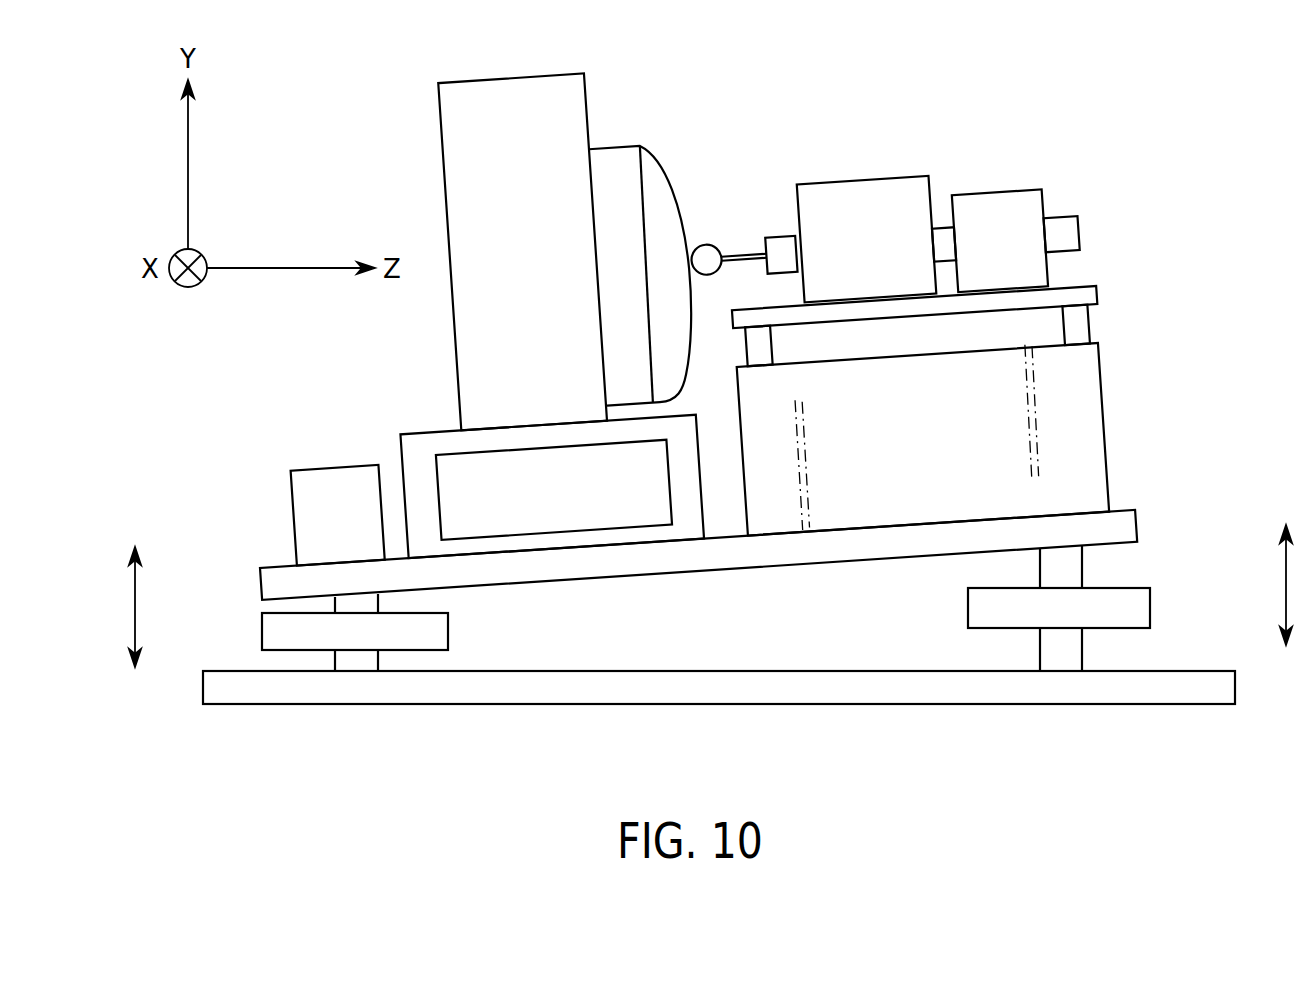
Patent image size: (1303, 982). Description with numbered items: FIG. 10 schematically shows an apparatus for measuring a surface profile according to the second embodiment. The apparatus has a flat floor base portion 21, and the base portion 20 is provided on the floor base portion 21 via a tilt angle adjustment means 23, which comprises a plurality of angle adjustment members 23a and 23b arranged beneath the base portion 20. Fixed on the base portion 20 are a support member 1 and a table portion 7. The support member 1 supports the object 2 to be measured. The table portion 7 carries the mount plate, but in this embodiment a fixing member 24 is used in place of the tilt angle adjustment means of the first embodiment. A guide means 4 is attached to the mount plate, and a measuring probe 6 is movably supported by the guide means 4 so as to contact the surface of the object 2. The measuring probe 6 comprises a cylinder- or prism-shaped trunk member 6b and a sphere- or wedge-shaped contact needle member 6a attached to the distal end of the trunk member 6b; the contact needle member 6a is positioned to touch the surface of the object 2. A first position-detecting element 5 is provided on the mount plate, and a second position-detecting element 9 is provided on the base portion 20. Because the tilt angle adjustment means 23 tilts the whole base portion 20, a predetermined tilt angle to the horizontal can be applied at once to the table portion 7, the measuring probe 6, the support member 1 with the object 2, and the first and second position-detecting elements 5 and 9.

The support member 1 is at (516, 92).
The object to be measured 2 is at (658, 171).
The guide means 4 is at (884, 190).
The first position-detecting element 5 is at (1008, 205).
The measuring probe 6 is at (744, 188).
The contact needle member 6a is at (707, 250).
The trunk member 6b is at (776, 240).
The table portion 7 is at (1097, 455).
The second position-detecting element 9 is at (319, 476).
The base portion 20 is at (1133, 521).
The floor base portion 21 is at (767, 671).
The tilt angle adjustment means 23 is at (706, 608).
The angle adjustment member 23a is at (272, 629).
The angle adjustment member 23b is at (1143, 610).
The fixing member 24 is at (1108, 321).